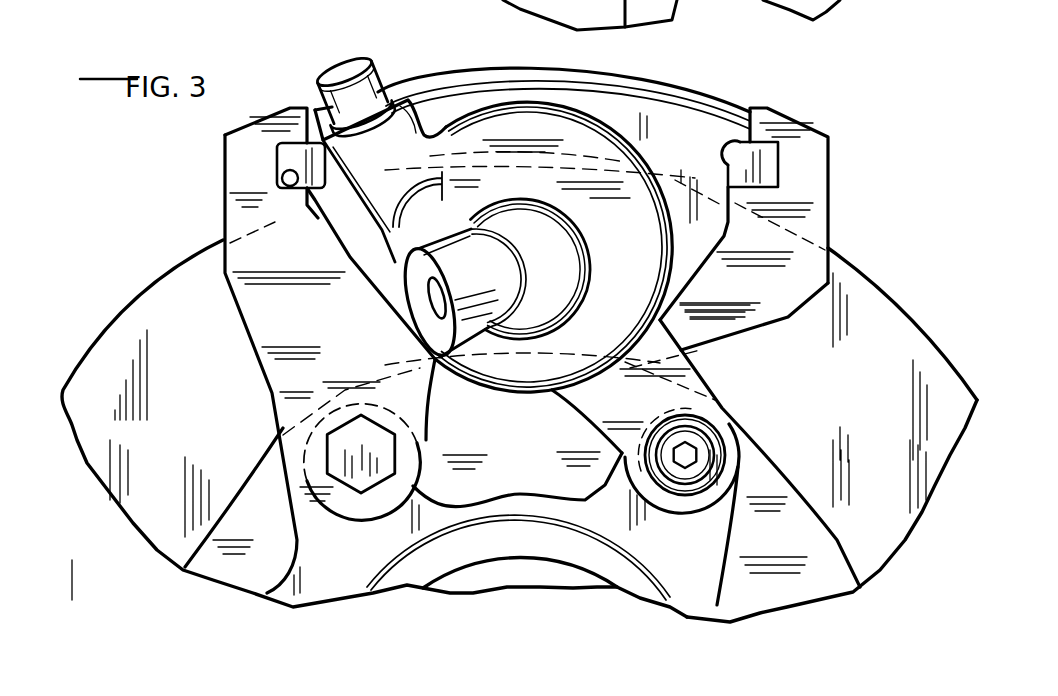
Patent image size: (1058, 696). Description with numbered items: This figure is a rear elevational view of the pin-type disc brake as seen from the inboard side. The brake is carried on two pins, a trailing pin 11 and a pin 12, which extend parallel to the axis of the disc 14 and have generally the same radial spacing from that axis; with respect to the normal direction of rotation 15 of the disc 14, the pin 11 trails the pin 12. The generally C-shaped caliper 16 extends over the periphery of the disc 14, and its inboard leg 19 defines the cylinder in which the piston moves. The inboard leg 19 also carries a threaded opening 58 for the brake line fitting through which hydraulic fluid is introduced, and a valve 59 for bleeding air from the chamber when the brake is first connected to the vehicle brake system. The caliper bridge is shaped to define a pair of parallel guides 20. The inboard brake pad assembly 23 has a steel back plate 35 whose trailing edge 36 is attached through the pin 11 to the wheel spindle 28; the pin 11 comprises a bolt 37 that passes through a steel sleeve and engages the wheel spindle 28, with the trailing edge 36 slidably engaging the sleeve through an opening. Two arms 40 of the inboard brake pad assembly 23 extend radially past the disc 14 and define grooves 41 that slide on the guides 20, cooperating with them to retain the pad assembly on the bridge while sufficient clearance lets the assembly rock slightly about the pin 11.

The trailing pin 11 is at (400, 444).
The pin 12 is at (728, 434).
The disc 14 is at (888, 297).
The normal direction of rotation 15 is at (873, 413).
The caliper 16 is at (655, 84).
The inboard caliper leg 19 is at (703, 383).
The guides 20 is at (277, 160).
The inboard brake pad assembly 23 is at (262, 380).
The wheel spindle 28 is at (520, 493).
The steel back plate 35 is at (242, 320).
The trailing edge 36 is at (290, 457).
The bolt 37 is at (380, 510).
The arms 40 is at (247, 122).
The grooves 41 is at (290, 188).
The threaded opening 58 is at (435, 300).
The bleed valve 59 is at (340, 63).